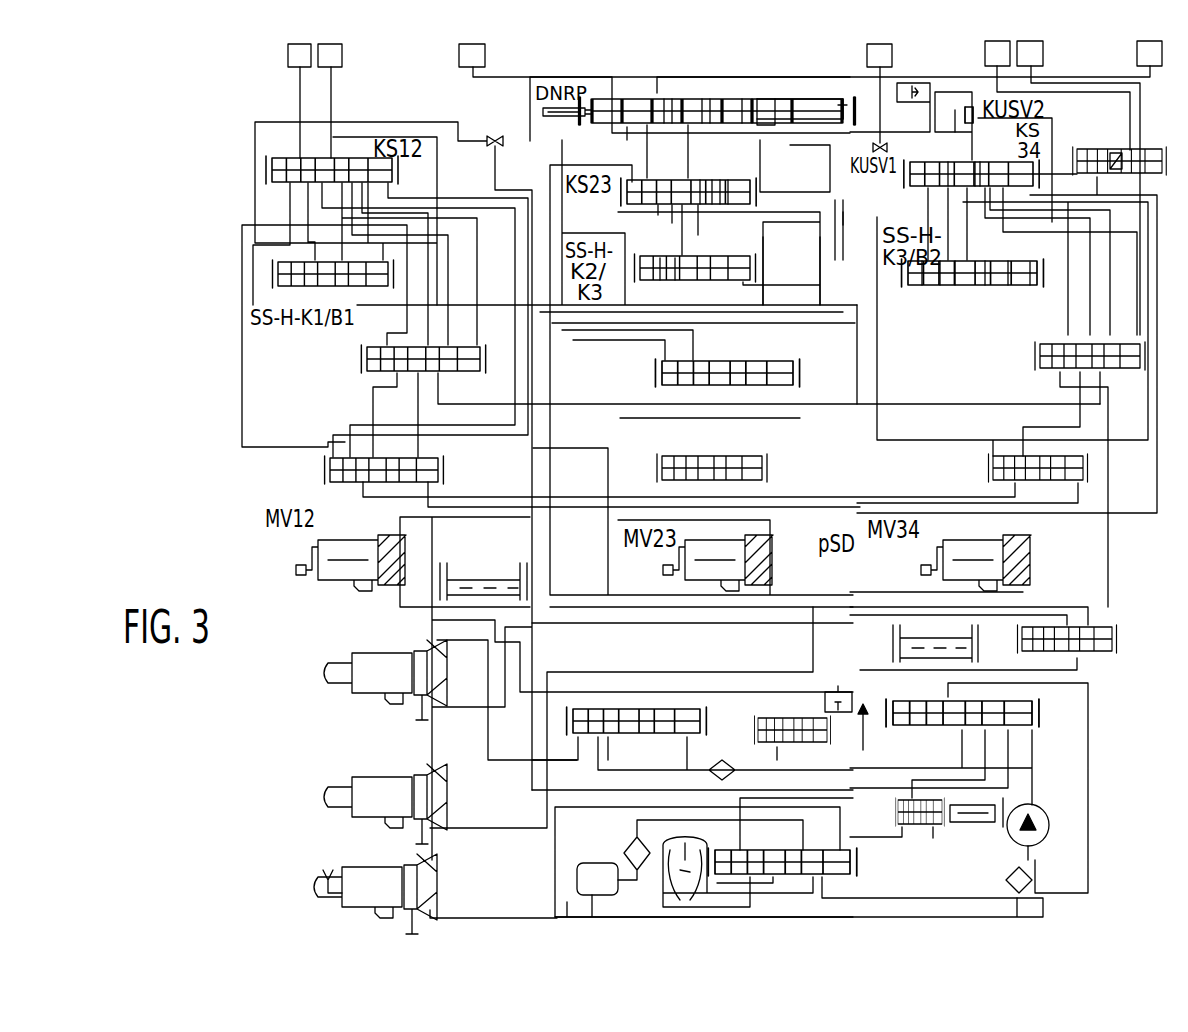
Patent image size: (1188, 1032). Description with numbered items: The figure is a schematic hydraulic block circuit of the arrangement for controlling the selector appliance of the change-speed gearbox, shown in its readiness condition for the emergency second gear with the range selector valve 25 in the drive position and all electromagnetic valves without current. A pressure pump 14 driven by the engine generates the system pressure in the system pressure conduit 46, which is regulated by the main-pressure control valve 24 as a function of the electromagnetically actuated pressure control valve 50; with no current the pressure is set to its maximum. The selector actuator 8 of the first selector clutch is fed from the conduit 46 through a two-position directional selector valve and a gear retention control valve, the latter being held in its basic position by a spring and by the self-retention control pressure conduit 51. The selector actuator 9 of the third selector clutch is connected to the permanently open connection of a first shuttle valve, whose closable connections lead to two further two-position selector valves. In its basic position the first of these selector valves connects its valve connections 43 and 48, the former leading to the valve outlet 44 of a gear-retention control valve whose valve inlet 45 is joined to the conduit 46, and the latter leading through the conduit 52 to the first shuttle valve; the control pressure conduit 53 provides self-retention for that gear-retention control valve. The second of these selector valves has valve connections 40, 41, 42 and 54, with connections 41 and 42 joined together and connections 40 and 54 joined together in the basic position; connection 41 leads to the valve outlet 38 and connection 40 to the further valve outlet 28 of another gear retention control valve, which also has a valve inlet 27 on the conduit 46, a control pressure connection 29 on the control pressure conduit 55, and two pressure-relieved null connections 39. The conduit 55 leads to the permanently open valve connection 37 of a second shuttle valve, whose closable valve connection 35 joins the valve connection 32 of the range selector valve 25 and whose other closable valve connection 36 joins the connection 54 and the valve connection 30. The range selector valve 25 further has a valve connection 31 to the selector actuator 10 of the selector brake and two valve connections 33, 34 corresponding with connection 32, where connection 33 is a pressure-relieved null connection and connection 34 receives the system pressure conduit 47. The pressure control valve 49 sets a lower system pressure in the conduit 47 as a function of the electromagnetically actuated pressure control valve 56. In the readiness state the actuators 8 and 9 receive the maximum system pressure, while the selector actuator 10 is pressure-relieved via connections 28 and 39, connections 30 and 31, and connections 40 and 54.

The selector actuator 8 is at (283, 73).
The selector actuator 9 is at (862, 57).
The selector actuator 10 is at (1047, 56).
The pressure pump 14 is at (1052, 808).
The main-pressure control valve 24 is at (1042, 716).
The range selector valve 25 is at (637, 95).
The valve inlet 27 is at (957, 287).
The valve outlet 28 is at (985, 287).
The control pressure connection 29 is at (1030, 280).
The valve connection 30 is at (680, 125).
The valve connection 31 is at (710, 97).
The valve connection 32 is at (777, 130).
The valve connection 33 is at (845, 108).
The valve connection 34 is at (746, 125).
The closable valve connection 35 is at (968, 108).
The closable valve connection 36 is at (949, 119).
The permanently open valve connection 37 is at (981, 108).
The valve outlet 38 is at (942, 287).
The null connections 39 is at (1008, 287).
The valve connection 40 is at (980, 188).
The valve connection 41 is at (948, 198).
The valve connection 42 is at (940, 162).
The valve connection 43 is at (708, 206).
The valve outlet 44 is at (665, 282).
The valve inlet 45 is at (672, 282).
The system pressure conduit 46 is at (787, 292).
The system pressure conduit 47 is at (851, 217).
The valve connection 48 is at (720, 178).
The pressure control valve 49 is at (1100, 644).
The electromagnetically actuated pressure control valve 50 is at (375, 660).
The control pressure conduit 51 is at (255, 183).
The conduit 52 is at (836, 226).
The control pressure conduit 53 is at (827, 225).
The valve connection 54 is at (987, 162).
The control pressure conduit 55 is at (1053, 158).
The electromagnetically actuated pressure control valve 56 is at (370, 780).